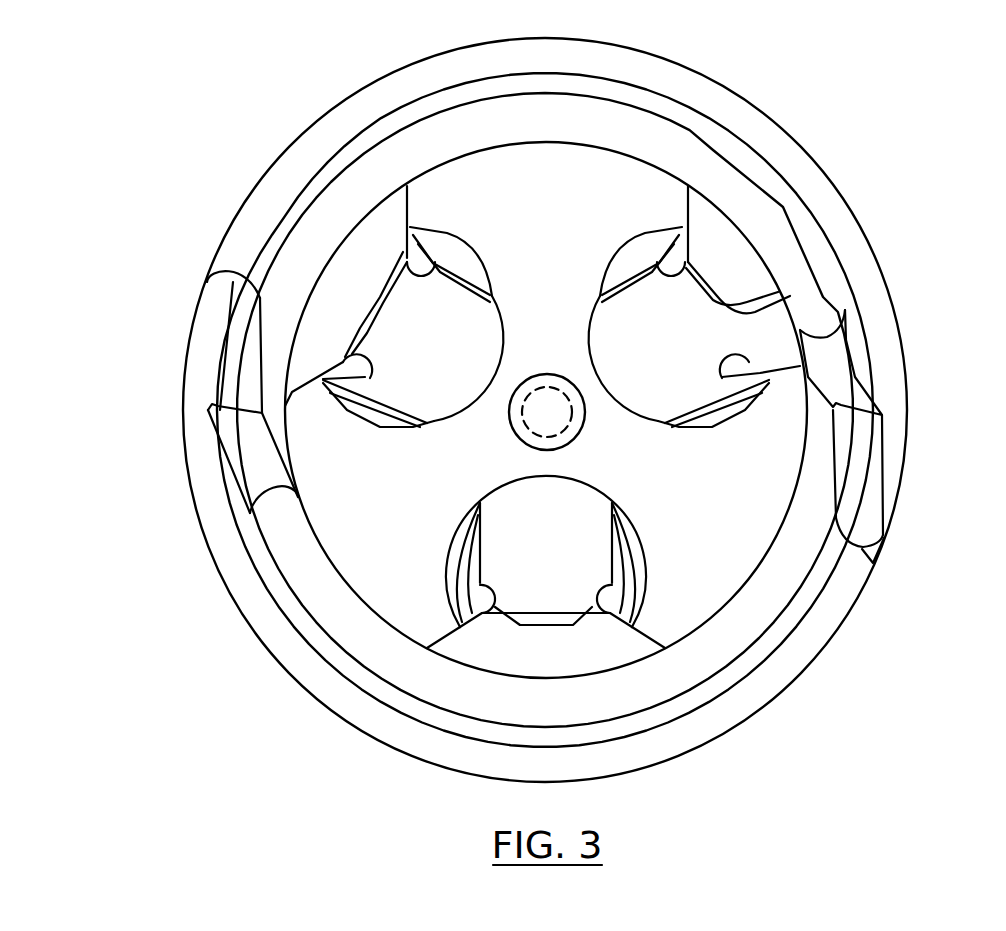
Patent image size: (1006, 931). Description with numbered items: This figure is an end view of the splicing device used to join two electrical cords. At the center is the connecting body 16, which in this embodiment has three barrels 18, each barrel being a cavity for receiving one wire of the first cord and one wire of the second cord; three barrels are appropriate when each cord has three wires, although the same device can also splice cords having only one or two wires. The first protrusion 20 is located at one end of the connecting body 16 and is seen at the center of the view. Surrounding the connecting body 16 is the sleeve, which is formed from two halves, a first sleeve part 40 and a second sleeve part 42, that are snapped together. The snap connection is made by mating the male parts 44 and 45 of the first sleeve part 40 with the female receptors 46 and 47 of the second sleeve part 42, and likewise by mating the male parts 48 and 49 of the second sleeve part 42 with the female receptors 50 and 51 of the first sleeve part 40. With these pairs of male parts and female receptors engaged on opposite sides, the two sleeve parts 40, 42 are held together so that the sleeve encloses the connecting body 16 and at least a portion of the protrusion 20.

The connecting body 16 is at (615, 440).
The barrels 18 is at (430, 345).
The first protrusion 20 is at (550, 420).
The first sleeve part 40 is at (775, 148).
The second sleeve part 42 is at (370, 712).
The male part 44 is at (873, 503).
The male part 45 is at (260, 468).
The female receptor 46 is at (872, 553).
The female receptor 47 is at (250, 492).
The male part 48 is at (218, 312).
The male part 49 is at (843, 373).
The female receptor 50 is at (233, 270).
The female receptor 51 is at (835, 337).